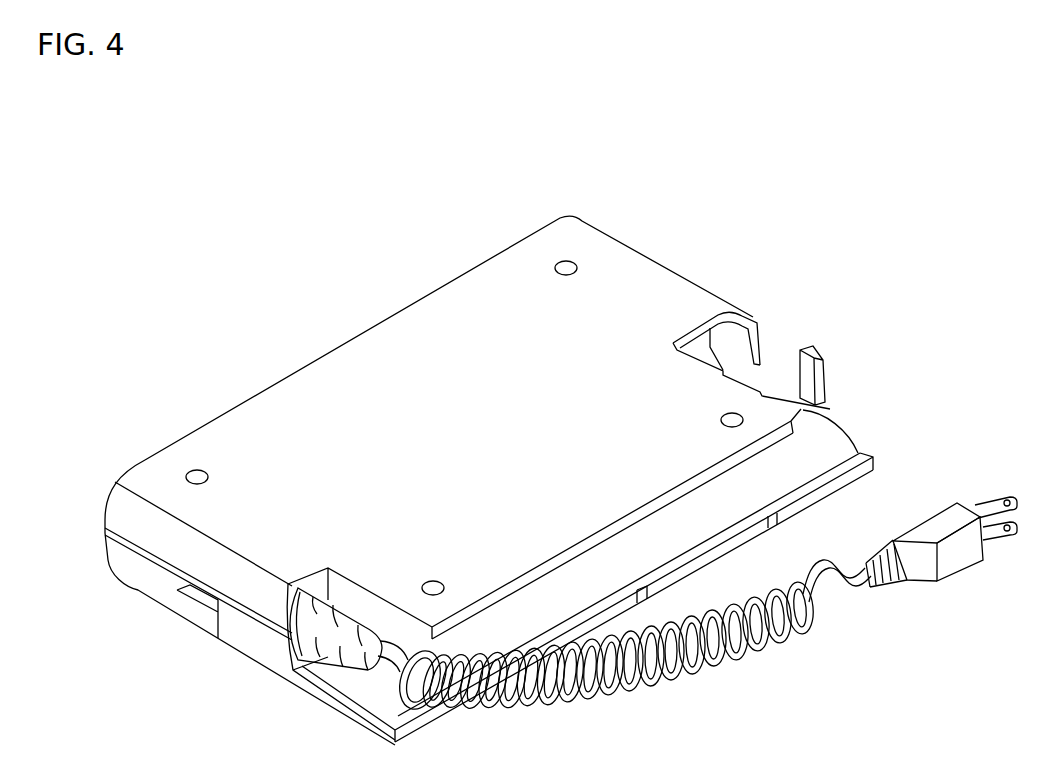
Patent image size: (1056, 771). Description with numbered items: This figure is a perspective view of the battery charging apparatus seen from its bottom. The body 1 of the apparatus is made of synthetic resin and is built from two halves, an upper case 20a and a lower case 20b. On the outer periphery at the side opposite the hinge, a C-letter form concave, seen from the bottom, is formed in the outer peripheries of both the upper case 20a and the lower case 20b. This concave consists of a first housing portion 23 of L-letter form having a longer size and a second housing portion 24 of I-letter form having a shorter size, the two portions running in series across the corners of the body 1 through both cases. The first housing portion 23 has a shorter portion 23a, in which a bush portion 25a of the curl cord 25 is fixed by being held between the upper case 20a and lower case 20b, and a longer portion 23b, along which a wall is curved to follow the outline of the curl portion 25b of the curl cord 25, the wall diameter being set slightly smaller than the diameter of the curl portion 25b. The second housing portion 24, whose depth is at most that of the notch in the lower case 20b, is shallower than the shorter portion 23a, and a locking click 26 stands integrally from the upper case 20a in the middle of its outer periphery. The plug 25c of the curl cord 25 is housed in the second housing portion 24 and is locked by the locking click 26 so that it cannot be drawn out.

The body of battery charging apparatus 1 is at (365, 302).
The upper case 20a is at (165, 593).
The lower case 20b is at (222, 462).
The first housing portion 23 is at (792, 526).
The shorter portion of the first housing portion 23a is at (360, 688).
The longer portion of the first housing portion 23b is at (698, 538).
The second housing portion 24 is at (805, 413).
The curl cord 25 is at (744, 664).
The bush portion 25a is at (300, 648).
The curl portion 25b is at (570, 693).
The plug 25c is at (955, 566).
The locking click 26 is at (823, 360).